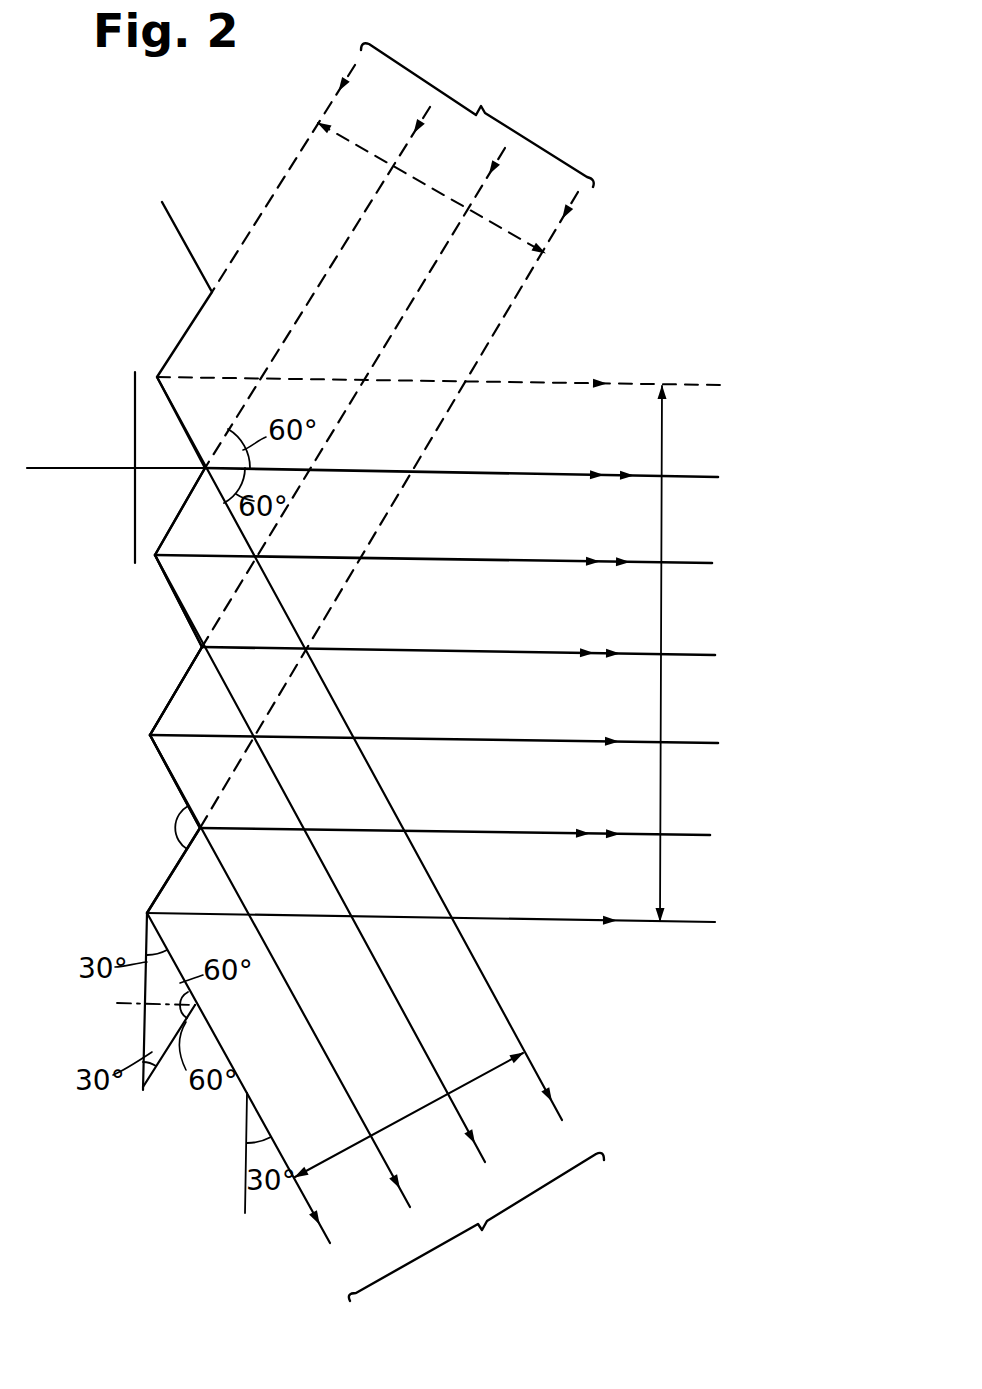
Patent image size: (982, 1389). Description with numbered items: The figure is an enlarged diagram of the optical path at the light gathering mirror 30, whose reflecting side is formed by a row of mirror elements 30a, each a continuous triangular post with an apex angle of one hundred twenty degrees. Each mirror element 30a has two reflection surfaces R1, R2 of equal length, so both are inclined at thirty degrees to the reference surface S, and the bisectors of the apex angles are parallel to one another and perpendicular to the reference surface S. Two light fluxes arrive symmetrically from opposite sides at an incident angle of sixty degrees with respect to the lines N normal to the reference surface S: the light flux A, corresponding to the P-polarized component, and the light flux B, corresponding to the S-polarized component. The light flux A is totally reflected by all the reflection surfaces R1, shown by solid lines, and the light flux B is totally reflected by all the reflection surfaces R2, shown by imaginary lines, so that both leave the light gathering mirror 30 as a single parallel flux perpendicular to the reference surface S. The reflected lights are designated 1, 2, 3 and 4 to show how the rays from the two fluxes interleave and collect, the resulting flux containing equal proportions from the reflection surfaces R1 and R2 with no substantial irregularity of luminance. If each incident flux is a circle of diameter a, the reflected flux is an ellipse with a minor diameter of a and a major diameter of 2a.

The light gathering mirror 30 is at (103, 640).
The mirror element 30a is at (190, 477).
The reflection surface R1 is at (171, 702).
The reflection surface R2 is at (179, 597).
The normal line N is at (60, 467).
The reference surface S is at (133, 420).
The light flux A is at (166, 1056).
The light flux B is at (397, 435).
The diameter a is at (429, 650).
The major diameter 2a is at (438, 369).
The reflected light 1 is at (451, 1092).
The reflected light 2 is at (453, 985).
The reflected light 3 is at (459, 876).
The reflected light 4 is at (460, 768).